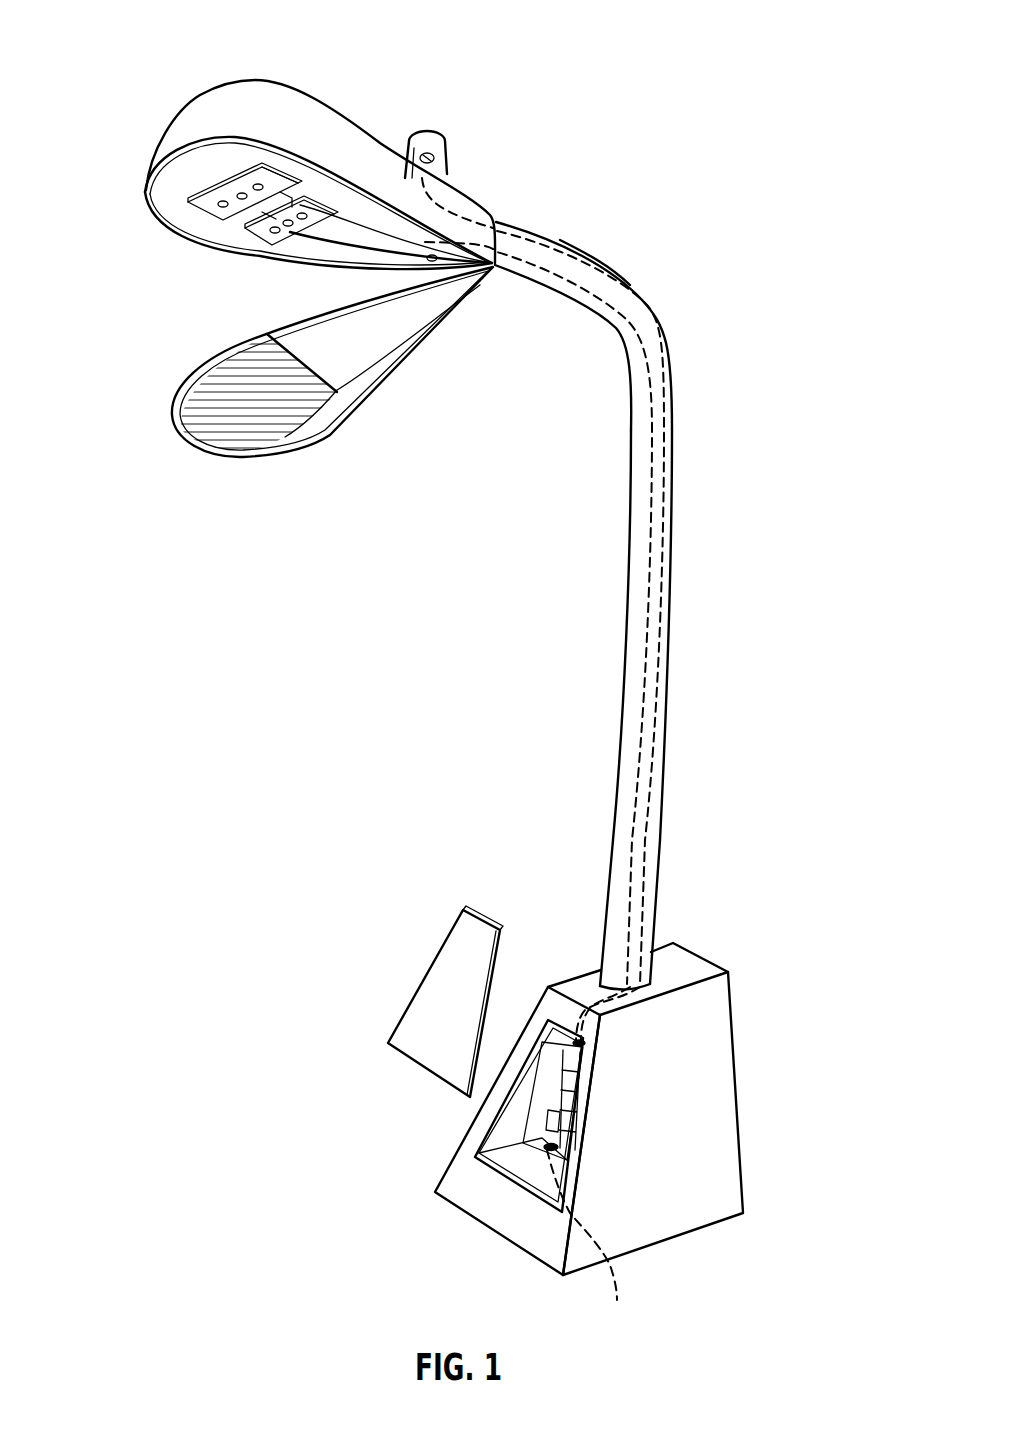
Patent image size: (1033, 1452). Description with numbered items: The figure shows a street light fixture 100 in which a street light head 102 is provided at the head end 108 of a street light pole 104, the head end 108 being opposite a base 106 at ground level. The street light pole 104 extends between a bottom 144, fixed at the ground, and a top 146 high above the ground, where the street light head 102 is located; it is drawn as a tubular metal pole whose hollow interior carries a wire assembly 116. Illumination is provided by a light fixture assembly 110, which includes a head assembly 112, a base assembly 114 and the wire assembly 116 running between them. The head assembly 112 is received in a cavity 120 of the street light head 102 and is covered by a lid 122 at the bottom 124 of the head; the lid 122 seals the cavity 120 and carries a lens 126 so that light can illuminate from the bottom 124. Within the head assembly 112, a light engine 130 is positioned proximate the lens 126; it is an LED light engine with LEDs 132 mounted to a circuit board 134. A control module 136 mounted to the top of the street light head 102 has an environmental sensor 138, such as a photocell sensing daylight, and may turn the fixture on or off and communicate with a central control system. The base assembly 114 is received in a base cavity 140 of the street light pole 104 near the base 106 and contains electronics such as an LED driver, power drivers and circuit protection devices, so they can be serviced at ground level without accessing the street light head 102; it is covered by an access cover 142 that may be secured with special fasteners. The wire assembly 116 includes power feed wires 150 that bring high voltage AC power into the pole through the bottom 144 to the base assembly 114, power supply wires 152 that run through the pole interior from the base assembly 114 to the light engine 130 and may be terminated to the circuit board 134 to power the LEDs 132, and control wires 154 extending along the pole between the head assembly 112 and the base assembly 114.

The street light fixture 100 is at (670, 98).
The street light head 102 is at (334, 88).
The street light pole 104 is at (611, 559).
The base 106 is at (581, 1122).
The head end 108 is at (503, 203).
The light fixture assembly 110 is at (194, 142).
The head assembly 112 is at (245, 239).
The base assembly 114 is at (514, 1117).
The wire assembly 116 is at (594, 607).
The cavity 120 is at (178, 181).
The lid 122 is at (294, 392).
The bottom 124 is at (262, 458).
The lens 126 is at (223, 412).
The light engine 130 is at (294, 171).
The LEDs 132 is at (237, 193).
The circuit board 134 is at (264, 168).
The control module 136 is at (481, 136).
The environmental sensor 138 is at (447, 152).
The base cavity 140 is at (516, 1155).
The access cover 142 is at (440, 987).
The bottom 144 is at (505, 1239).
The top 146 is at (529, 226).
The power feed wires 150 is at (624, 1278).
The power supply wires 152 is at (625, 820).
The control wires 154 is at (657, 796).